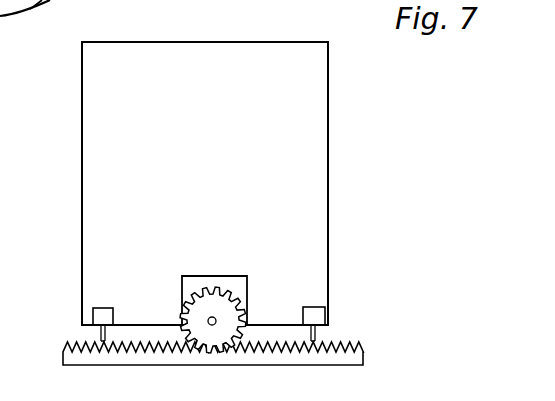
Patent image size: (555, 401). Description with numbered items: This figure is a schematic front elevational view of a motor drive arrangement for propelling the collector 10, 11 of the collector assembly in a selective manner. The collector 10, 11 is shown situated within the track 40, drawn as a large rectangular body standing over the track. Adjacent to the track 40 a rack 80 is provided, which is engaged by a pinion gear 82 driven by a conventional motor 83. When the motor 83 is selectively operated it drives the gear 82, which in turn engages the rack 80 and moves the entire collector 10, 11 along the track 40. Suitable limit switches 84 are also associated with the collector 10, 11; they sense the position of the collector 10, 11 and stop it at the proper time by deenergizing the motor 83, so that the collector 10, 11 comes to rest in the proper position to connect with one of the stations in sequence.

The collector 10 is at (256, 183).
The collector 11 is at (304, 150).
The track 40 is at (374, 343).
The rack 80 is at (163, 356).
The pinion gear 82 is at (222, 328).
The motor 83 is at (236, 281).
The limit switches 84 is at (106, 313).